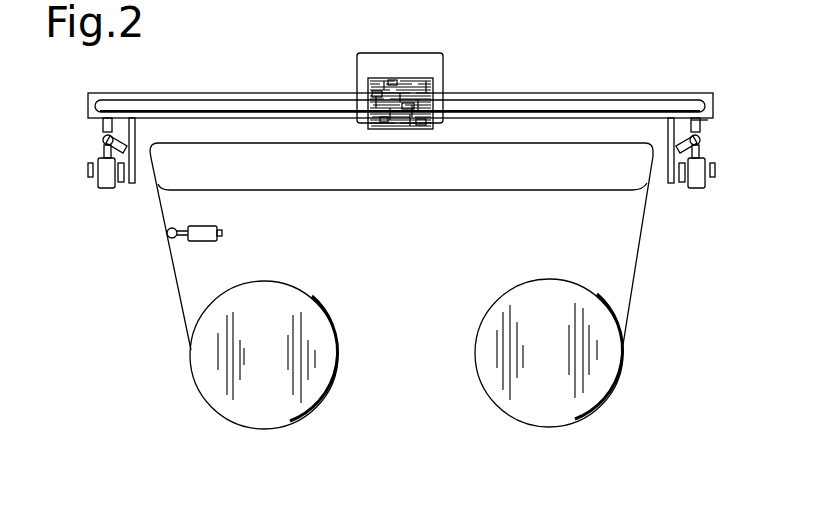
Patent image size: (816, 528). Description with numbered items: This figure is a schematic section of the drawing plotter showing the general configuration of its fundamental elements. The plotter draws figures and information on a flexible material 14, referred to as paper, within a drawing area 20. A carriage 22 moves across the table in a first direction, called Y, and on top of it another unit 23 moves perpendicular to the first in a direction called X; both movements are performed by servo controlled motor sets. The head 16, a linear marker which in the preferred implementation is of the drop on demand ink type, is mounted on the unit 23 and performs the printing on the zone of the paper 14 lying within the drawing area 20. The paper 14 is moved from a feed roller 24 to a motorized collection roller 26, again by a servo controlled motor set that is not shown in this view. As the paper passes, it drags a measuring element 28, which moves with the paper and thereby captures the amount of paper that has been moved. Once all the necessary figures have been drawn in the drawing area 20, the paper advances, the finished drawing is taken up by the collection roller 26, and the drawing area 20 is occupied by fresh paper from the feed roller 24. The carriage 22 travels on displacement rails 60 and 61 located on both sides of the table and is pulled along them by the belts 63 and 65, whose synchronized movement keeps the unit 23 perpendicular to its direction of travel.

The flexible material (paper) 14 is at (163, 281).
The head 16 is at (413, 136).
The drawing area 20 is at (206, 141).
The carriage 22 is at (271, 84).
The carriage (X-direction unit) 23 is at (454, 66).
The feed roller 24 is at (207, 359).
The collection roller 26 is at (608, 355).
The measuring element 28 is at (219, 233).
The displacement rail 60 is at (716, 139).
The displacement rail 61 is at (92, 141).
The belt 63 is at (681, 193).
The belt 65 is at (122, 191).